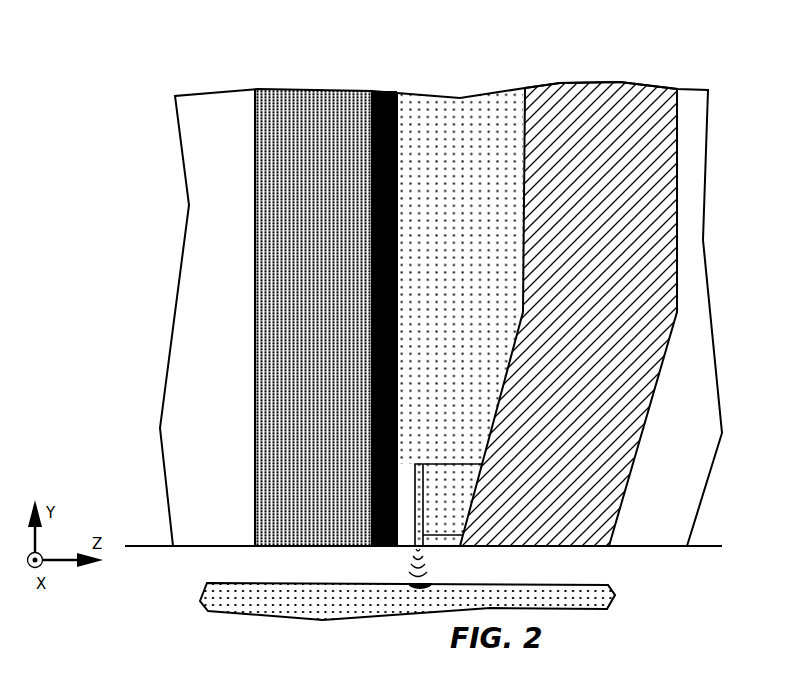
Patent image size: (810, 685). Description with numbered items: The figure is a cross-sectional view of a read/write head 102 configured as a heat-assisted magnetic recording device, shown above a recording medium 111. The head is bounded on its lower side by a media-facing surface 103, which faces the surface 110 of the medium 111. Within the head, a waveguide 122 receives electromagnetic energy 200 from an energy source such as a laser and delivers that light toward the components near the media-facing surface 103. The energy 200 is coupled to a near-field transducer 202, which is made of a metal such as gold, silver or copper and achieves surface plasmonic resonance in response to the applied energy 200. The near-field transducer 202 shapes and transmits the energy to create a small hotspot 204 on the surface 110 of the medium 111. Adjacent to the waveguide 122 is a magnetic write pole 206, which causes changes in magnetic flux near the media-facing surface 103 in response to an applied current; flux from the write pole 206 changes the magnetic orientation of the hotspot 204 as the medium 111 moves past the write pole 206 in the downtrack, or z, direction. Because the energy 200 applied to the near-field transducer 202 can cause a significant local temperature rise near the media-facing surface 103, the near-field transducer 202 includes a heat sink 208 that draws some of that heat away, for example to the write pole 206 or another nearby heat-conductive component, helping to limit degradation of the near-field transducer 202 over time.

The read/write head 102 is at (158, 62).
The media-facing surface 103 is at (710, 548).
The surface of medium 110 is at (568, 593).
The recording medium 111 is at (590, 598).
The waveguide 122 is at (517, 62).
The electromagnetic energy 200 is at (418, 210).
The near-field transducer 202 is at (410, 556).
The hotspot 204 is at (420, 588).
The magnetic write pole 206 is at (610, 83).
The heat sink 208 is at (440, 525).